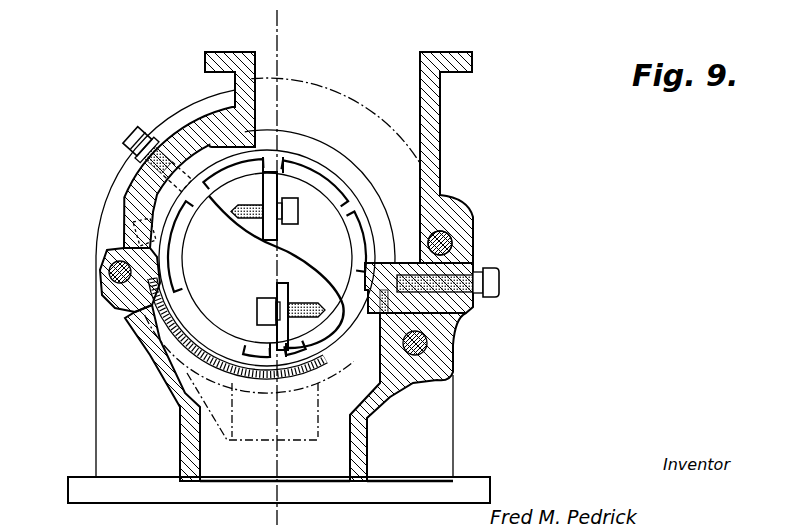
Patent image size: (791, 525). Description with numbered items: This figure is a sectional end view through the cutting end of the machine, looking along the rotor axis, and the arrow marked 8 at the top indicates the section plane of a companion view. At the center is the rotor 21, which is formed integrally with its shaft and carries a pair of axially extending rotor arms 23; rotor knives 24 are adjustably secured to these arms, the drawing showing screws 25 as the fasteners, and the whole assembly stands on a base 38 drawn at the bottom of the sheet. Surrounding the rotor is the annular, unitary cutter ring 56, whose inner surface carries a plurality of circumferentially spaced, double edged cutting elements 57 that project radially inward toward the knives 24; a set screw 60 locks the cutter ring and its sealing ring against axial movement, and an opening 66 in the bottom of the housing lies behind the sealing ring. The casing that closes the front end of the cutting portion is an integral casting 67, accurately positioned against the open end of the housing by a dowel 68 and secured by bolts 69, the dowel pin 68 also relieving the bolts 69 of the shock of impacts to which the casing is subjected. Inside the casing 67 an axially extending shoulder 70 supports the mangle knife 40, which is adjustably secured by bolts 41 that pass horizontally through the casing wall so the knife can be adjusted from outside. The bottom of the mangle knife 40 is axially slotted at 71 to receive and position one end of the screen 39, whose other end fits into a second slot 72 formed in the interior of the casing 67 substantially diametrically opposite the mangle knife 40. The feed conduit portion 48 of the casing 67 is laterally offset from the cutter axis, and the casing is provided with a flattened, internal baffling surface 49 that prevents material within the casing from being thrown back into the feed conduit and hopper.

The section line 8 is at (296, 15).
The rotor 21 is at (193, 313).
The rotor arms 23 is at (233, 225).
The rotor knives 24 is at (273, 189).
The screws 25 is at (295, 213).
The base 38 is at (336, 470).
The screen 39 is at (271, 383).
The mangle knife 40 is at (398, 270).
The bolts 41 is at (498, 283).
The feed conduit portion 48 is at (437, 110).
The flattened internal baffling surface 49 is at (202, 132).
The cutter ring 56 is at (364, 173).
The cutting elements 57 is at (361, 213).
The set screw 60 is at (130, 138).
The opening 66 is at (257, 425).
The casing 67 is at (438, 232).
The dowel pin 68 is at (430, 347).
The bolts 69 is at (114, 277).
The shoulder 70 is at (459, 316).
The slot 71 is at (432, 300).
The slot 72 is at (142, 248).